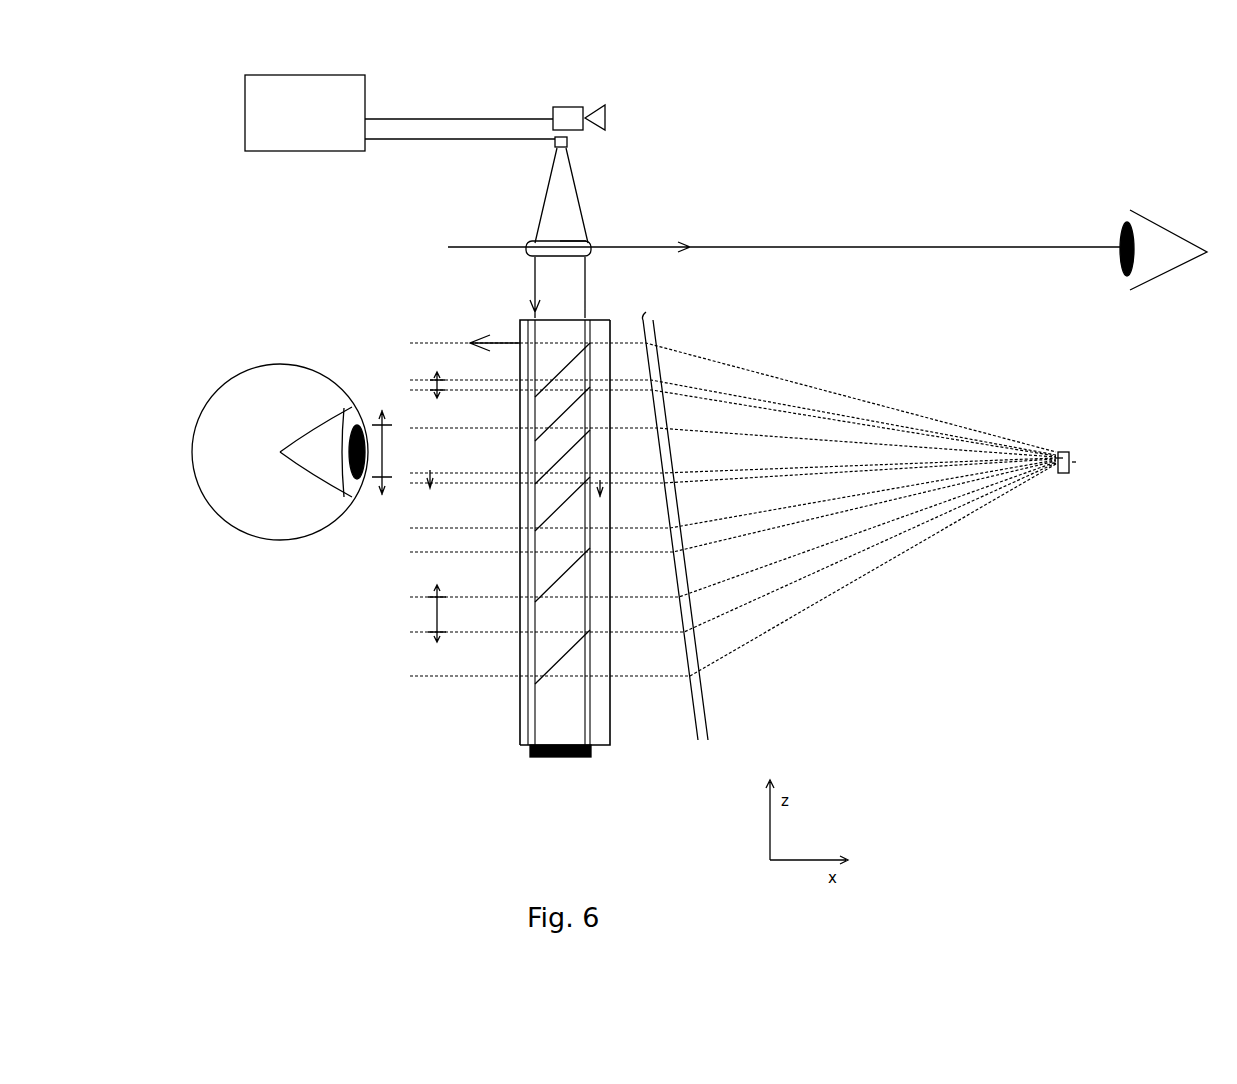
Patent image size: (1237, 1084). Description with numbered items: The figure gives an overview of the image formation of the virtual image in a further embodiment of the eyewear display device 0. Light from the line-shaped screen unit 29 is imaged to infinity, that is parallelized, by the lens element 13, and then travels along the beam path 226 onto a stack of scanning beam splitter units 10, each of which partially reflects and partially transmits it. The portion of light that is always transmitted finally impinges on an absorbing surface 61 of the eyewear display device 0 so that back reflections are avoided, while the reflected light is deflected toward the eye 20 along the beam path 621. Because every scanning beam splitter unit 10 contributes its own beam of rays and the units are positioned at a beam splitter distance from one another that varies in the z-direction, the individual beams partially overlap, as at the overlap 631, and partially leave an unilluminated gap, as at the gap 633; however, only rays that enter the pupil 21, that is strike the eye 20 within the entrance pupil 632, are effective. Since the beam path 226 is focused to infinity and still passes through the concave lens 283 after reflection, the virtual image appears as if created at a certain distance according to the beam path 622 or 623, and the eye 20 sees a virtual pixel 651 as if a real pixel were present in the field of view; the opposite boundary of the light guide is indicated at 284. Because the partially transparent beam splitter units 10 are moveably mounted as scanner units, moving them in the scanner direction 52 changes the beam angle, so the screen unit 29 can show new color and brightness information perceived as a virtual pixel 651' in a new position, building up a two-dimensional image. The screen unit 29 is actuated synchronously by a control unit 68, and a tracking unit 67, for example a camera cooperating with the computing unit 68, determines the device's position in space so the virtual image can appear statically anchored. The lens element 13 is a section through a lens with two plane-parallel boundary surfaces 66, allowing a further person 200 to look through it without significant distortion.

The eyewear display device 0 is at (742, 207).
The scanning beam splitter unit 10 is at (546, 512).
The lens element 13 is at (580, 241).
The eye 20 is at (281, 365).
The pupil 21 is at (362, 425).
The line-shaped screen unit 29 is at (567, 150).
The scanner direction 52 is at (436, 474).
The absorbing surface 61 is at (550, 758).
The plane-parallel boundary surfaces 66 is at (532, 247).
The tracking unit 67 is at (572, 107).
The control unit 68 is at (305, 151).
The further person 200 is at (1130, 212).
The beam path 226 is at (532, 292).
The concave lens 283 is at (518, 712).
The light guide second surface 284 is at (610, 728).
The beam path 621 is at (428, 340).
The beam path 622 is at (643, 320).
The beam path 623 is at (785, 360).
The overlap 631 is at (430, 378).
The entrance pupil 632 is at (388, 448).
The gap 633 is at (430, 618).
The virtual pixel 651 is at (1084, 446).
The virtual pixel 651' is at (1062, 484).